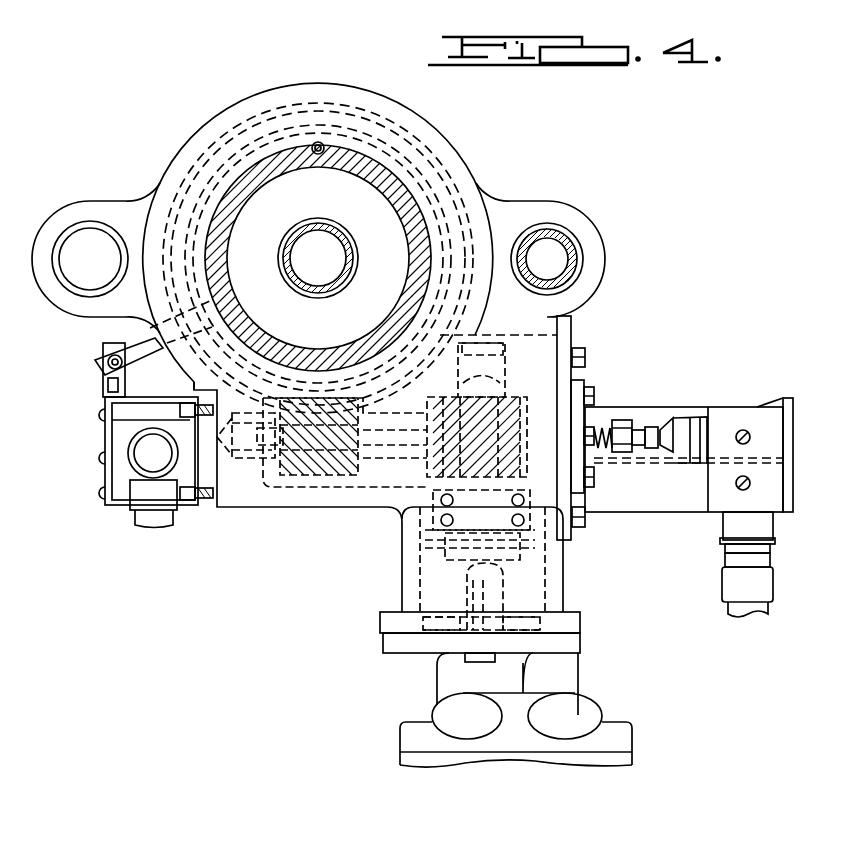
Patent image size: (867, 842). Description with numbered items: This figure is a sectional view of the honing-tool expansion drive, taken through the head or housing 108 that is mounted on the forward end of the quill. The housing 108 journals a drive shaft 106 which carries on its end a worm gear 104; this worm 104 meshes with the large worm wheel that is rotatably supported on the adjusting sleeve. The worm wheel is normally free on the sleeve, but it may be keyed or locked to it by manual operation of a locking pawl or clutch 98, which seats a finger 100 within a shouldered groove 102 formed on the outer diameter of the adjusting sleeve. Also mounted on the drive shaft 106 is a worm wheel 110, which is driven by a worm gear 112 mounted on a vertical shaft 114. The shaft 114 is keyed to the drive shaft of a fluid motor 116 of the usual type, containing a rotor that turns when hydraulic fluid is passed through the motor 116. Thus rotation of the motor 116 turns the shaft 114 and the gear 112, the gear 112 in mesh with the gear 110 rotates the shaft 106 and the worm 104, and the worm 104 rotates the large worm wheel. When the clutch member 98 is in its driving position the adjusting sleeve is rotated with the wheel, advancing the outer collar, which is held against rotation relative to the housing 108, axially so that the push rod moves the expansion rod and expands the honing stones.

The locking pawl or clutch 98 is at (385, 130).
The finger 100 is at (276, 187).
The shouldered groove 102 is at (247, 157).
The worm gear 104 is at (298, 485).
The drive shaft 106 is at (388, 458).
The head or housing 108 is at (228, 498).
The worm wheel 110 is at (587, 376).
The worm gear 112 is at (420, 507).
The vertical shaft 114 is at (467, 570).
The fluid motor 116 is at (580, 708).